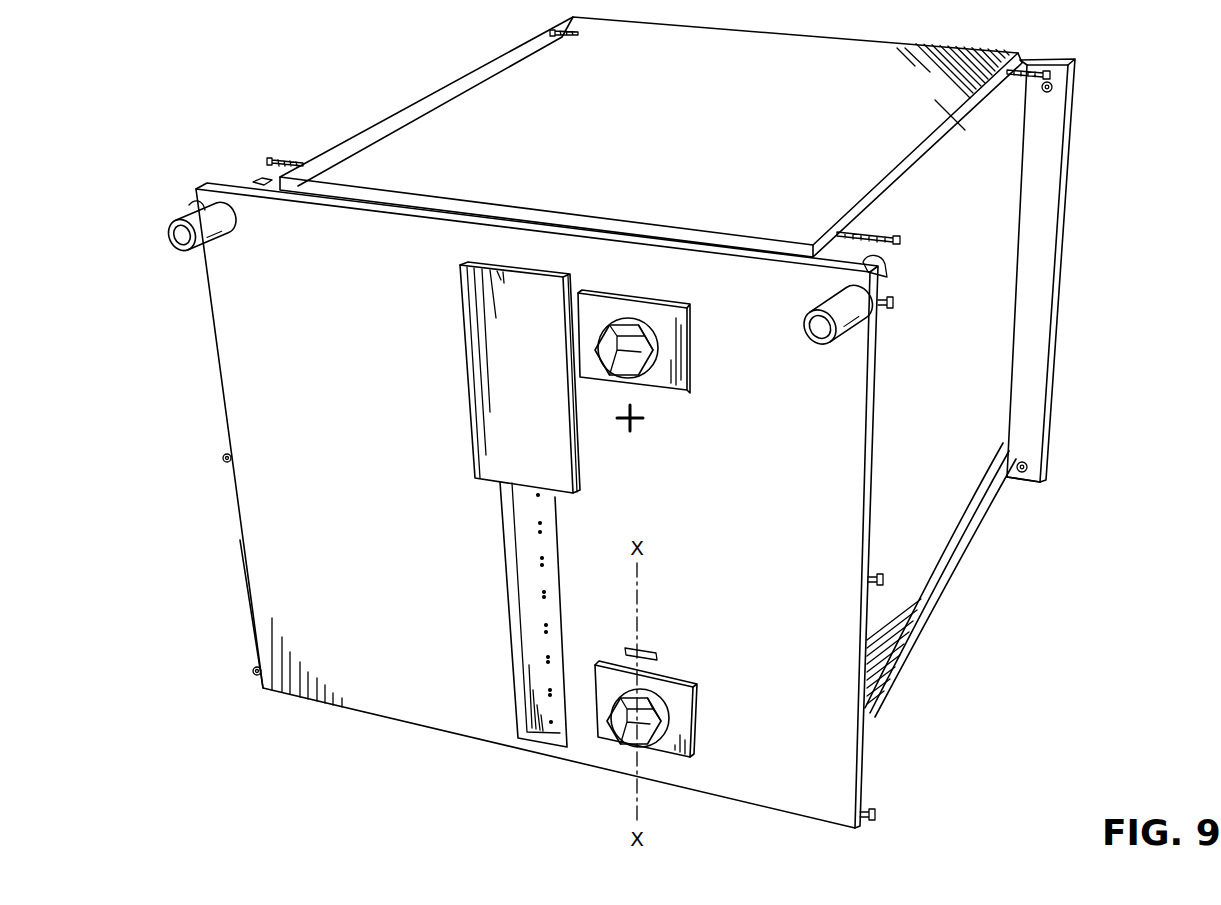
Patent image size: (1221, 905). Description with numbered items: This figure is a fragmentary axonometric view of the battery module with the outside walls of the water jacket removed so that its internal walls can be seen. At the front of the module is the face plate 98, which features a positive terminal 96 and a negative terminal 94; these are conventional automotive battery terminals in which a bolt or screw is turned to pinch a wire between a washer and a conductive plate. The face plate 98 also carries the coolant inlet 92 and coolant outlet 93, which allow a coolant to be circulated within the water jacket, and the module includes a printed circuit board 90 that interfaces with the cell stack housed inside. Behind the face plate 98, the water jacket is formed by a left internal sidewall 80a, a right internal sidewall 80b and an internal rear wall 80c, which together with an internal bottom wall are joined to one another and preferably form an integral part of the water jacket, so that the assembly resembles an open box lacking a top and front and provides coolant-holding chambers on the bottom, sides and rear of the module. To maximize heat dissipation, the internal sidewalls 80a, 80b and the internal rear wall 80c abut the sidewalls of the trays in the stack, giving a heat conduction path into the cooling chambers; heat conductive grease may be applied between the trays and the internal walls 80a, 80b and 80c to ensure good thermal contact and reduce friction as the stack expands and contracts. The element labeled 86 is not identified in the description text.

The left internal sidewall 80a is at (413, 105).
The right internal sidewall 80b is at (895, 572).
The internal rear wall 80c is at (1030, 422).
The mounting plate 86 is at (914, 95).
The printed circuit board 90 is at (503, 435).
The coolant inlet 92 is at (210, 222).
The coolant outlet 93 is at (825, 330).
The negative terminal 94 is at (625, 733).
The positive terminal 96 is at (625, 363).
The face plate 98 is at (458, 695).